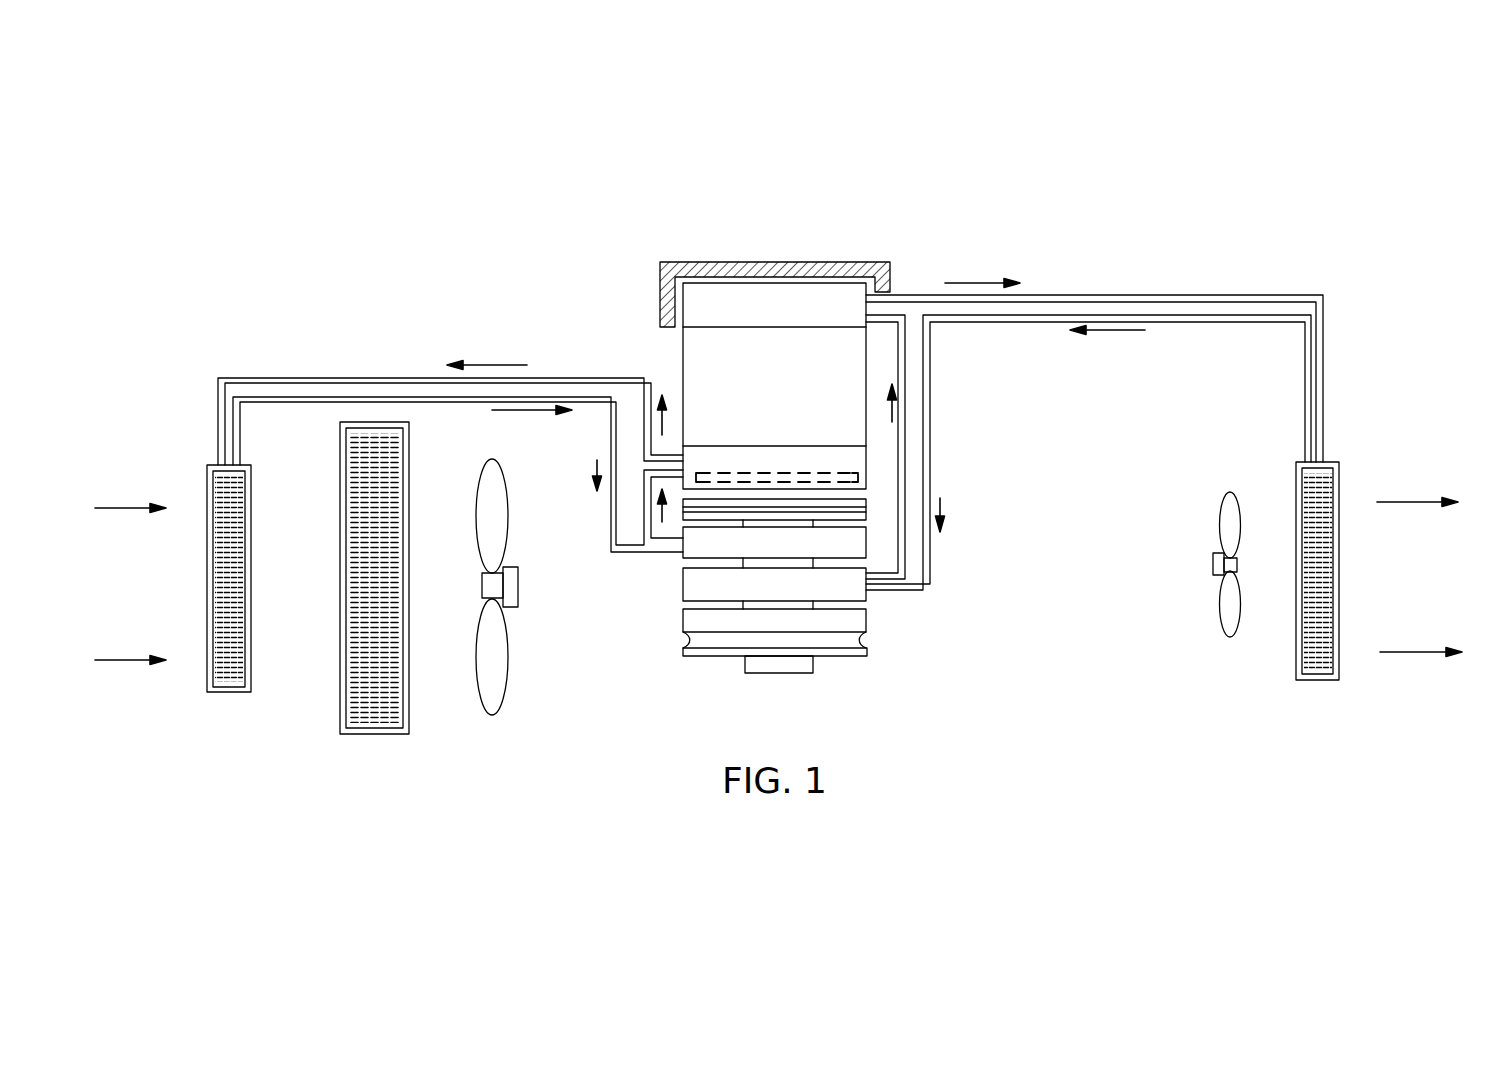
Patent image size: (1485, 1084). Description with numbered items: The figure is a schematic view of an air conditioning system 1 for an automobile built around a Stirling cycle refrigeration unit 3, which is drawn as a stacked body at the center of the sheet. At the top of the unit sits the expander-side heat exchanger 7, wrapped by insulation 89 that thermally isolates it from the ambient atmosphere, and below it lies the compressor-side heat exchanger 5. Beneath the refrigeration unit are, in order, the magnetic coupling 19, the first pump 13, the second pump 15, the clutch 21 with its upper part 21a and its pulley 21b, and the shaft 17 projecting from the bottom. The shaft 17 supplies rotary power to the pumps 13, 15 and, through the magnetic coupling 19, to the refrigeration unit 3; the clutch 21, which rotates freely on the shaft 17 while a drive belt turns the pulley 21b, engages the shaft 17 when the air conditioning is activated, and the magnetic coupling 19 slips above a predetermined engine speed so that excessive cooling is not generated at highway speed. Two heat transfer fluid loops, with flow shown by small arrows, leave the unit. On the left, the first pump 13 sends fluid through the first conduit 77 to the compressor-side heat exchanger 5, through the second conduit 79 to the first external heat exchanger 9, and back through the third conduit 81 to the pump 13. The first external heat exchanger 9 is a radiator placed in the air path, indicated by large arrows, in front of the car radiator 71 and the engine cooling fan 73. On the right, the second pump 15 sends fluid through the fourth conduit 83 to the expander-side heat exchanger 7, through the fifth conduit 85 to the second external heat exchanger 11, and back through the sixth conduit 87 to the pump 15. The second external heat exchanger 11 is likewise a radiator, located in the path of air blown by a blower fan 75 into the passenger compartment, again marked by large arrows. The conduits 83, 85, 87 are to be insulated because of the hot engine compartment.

The air conditioning system 1 is at (853, 224).
The Stirling cycle refrigeration unit 3 is at (866, 375).
The compressor-side heat exchanger 5 is at (866, 460).
The expander-side heat exchanger 7 is at (744, 283).
The first external heat exchanger 9 is at (252, 516).
The second external heat exchanger 11 is at (1340, 540).
The first pump 13 is at (866, 540).
The second pump 15 is at (868, 598).
The shaft 17 is at (795, 674).
The magnetic coupling 19 is at (893, 498).
The clutch 21 is at (866, 632).
The upper base plate 21a is at (682, 615).
The pulley 21b is at (687, 646).
The car radiator 71 is at (374, 736).
The engine cooling fan 73 is at (505, 690).
The right fan 75 is at (1228, 637).
The first conduit 77 is at (645, 510).
The second conduit 79 is at (553, 376).
The third conduit 81 is at (436, 406).
The fourth conduit 83 is at (906, 405).
The fifth conduit 85 is at (1098, 294).
The sixth conduit 87 is at (1198, 322).
The insulation 89 is at (880, 262).